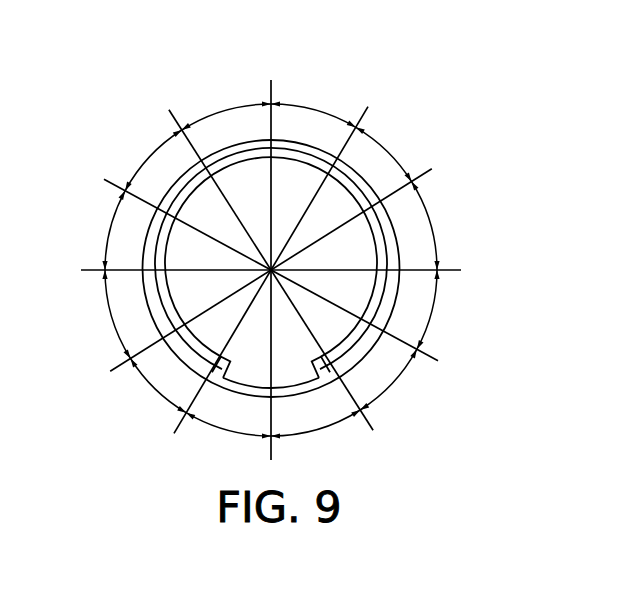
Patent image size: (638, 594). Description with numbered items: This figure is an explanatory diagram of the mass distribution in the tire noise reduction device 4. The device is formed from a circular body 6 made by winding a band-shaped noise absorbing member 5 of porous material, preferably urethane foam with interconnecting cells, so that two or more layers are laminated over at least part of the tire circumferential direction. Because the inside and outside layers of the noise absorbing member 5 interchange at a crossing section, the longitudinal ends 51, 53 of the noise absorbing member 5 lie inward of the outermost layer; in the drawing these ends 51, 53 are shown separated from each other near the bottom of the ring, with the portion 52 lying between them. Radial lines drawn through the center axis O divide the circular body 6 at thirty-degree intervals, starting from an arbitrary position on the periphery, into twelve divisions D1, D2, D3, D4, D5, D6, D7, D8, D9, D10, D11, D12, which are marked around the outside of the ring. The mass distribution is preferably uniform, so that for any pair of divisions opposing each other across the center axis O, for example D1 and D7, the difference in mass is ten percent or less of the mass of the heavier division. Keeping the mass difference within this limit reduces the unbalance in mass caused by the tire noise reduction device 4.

The tire noise reduction device 4 is at (141, 93).
The noise absorbing member 5 is at (340, 268).
The circular body 6 is at (401, 232).
The center axis O is at (271, 270).
The end of the noise absorbing member 51 is at (204, 352).
The thick-walled portion 52 is at (257, 395).
The end of the noise absorbing member 53 is at (345, 357).
The division D1 is at (313, 104).
The division D2 is at (391, 154).
The division D3 is at (444, 226).
The division D4 is at (442, 309).
The division D5 is at (389, 386).
The division D6 is at (315, 438).
The division D7 is at (228, 439).
The division D8 is at (152, 391).
The division D9 is at (100, 314).
The division D10 is at (97, 230).
The division D11 is at (147, 158).
The division D12 is at (226, 106).